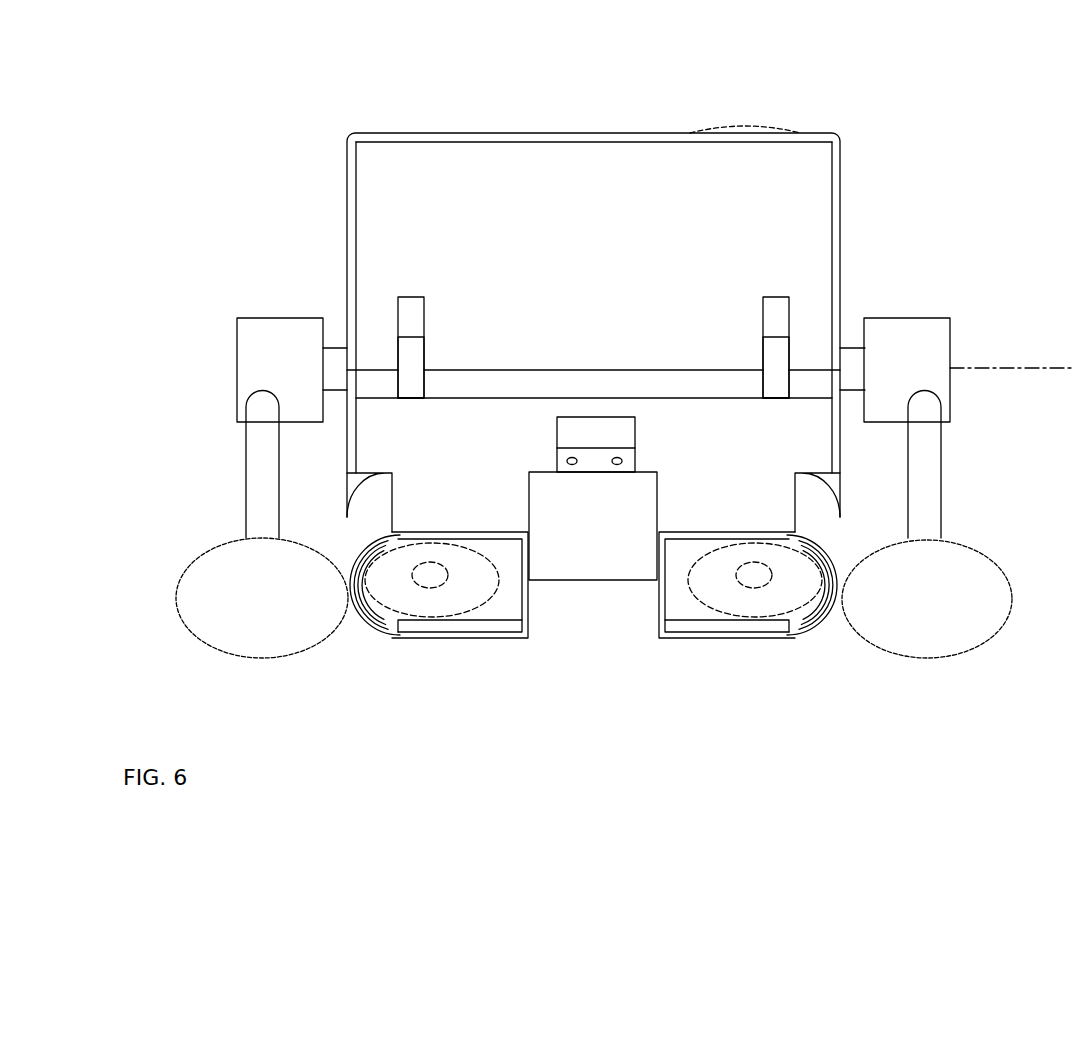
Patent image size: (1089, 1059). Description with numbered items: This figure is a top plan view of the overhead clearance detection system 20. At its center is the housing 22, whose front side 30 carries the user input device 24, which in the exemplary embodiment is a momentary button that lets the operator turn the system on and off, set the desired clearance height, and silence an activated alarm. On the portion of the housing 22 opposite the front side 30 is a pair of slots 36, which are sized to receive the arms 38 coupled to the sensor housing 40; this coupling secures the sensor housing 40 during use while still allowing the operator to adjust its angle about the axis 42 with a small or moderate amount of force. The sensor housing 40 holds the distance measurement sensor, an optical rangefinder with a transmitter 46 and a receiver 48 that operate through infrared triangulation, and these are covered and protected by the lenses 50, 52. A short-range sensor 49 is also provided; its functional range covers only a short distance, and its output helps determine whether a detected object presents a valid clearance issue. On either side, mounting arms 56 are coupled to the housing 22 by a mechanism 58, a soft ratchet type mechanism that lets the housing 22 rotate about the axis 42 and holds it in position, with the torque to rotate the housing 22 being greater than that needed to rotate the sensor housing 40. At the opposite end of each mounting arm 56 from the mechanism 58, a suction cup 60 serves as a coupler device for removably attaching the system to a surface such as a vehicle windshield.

The overhead clearance detection system 20 is at (1002, 156).
The housing 22 is at (840, 222).
The user input device 24 is at (728, 128).
The front side 30 is at (483, 133).
The slots 36 is at (407, 297).
The arms 38 is at (424, 348).
The sensor housing 40 is at (528, 616).
The axis 42 is at (1002, 366).
The transmitter 46 is at (765, 582).
The receiver 48 is at (420, 585).
The short-range sensor 49 is at (635, 462).
The lens 50 is at (730, 600).
The lens 52 is at (458, 590).
The mounting arms 56 is at (246, 488).
The mechanism 58 is at (255, 318).
The suction cup 60 is at (178, 603).